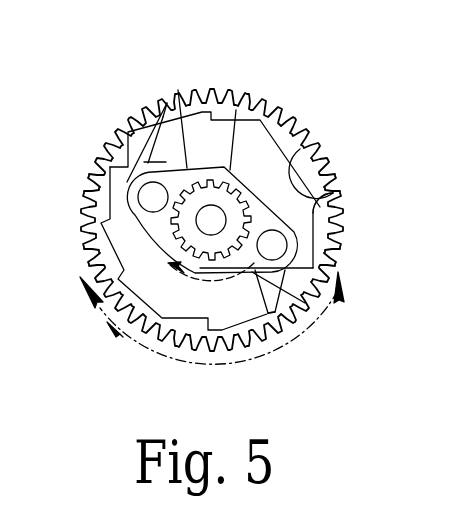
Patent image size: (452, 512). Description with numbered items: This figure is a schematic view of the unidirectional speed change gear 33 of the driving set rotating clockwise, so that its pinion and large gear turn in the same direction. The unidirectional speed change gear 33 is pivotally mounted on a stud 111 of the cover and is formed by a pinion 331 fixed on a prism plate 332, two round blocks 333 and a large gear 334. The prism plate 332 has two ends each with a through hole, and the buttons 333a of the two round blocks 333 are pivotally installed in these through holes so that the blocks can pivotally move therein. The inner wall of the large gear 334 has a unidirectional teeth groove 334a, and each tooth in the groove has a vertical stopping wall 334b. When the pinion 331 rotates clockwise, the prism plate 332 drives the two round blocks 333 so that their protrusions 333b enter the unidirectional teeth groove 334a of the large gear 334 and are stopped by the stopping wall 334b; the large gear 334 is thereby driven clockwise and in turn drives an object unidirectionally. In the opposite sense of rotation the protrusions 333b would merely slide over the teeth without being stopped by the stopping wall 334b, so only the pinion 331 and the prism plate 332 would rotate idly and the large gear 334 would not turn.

The unidirectional speed change gear 33 is at (299, 65).
The stud 111 is at (211, 235).
The pinion 331 is at (236, 110).
The prism plate 332 is at (232, 76).
The round block 333 is at (226, 225).
The button 333a is at (150, 194).
The protrusion 333b is at (142, 113).
The large gear 334 is at (257, 210).
The unidirectional teeth groove 334a is at (306, 143).
The stopping wall 334b is at (336, 192).